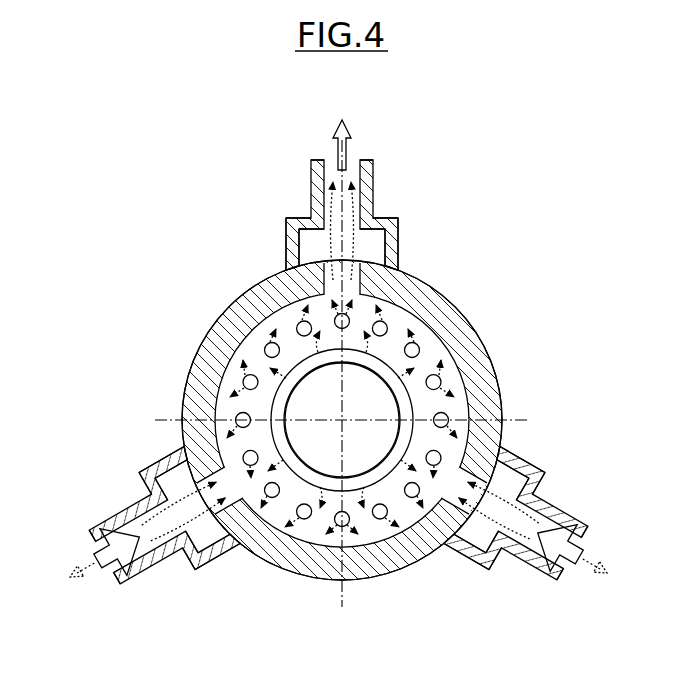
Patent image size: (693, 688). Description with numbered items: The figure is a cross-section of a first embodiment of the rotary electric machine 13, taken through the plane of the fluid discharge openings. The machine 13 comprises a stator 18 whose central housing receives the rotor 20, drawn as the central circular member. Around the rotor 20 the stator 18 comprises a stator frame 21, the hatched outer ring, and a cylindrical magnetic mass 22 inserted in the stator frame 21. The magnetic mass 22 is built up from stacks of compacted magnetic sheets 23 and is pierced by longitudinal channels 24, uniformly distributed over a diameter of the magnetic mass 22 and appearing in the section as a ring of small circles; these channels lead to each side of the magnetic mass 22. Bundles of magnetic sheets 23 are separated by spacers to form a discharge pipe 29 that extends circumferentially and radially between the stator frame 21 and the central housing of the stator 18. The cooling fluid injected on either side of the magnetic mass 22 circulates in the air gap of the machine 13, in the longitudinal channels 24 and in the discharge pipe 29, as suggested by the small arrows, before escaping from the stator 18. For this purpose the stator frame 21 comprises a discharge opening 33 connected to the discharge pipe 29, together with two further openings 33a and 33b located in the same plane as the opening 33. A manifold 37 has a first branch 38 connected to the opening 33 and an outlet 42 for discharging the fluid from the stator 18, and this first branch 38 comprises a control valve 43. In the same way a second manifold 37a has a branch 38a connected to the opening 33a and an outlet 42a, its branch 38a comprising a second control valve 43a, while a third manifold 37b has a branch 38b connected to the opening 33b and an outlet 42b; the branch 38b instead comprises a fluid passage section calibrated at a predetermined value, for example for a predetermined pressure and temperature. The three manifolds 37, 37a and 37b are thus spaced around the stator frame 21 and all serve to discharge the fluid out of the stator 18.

The rotary electric machine 13 is at (246, 199).
The stator 18 is at (520, 375).
The rotor 20 is at (318, 441).
The stator frame 21 is at (462, 320).
The cylindrical magnetic mass 22 is at (463, 409).
The compacted magnetic sheets 23 is at (342, 420).
The longitudinal channels 24 is at (240, 378).
The discharge pipe 29 is at (456, 368).
The discharge opening 33 is at (232, 540).
The discharge opening 33a is at (449, 540).
The discharge opening 33b is at (356, 292).
The manifold 37 is at (104, 495).
The second manifold 37a is at (581, 496).
The third manifold 37b is at (375, 146).
The first branch 38 is at (140, 454).
The branch 38a is at (535, 469).
The branch 38b is at (376, 190).
The outlet 42 is at (78, 531).
The outlet 42a is at (601, 533).
The outlet 42b is at (320, 154).
The control valve 43 is at (146, 579).
The second control valve 43a is at (535, 578).